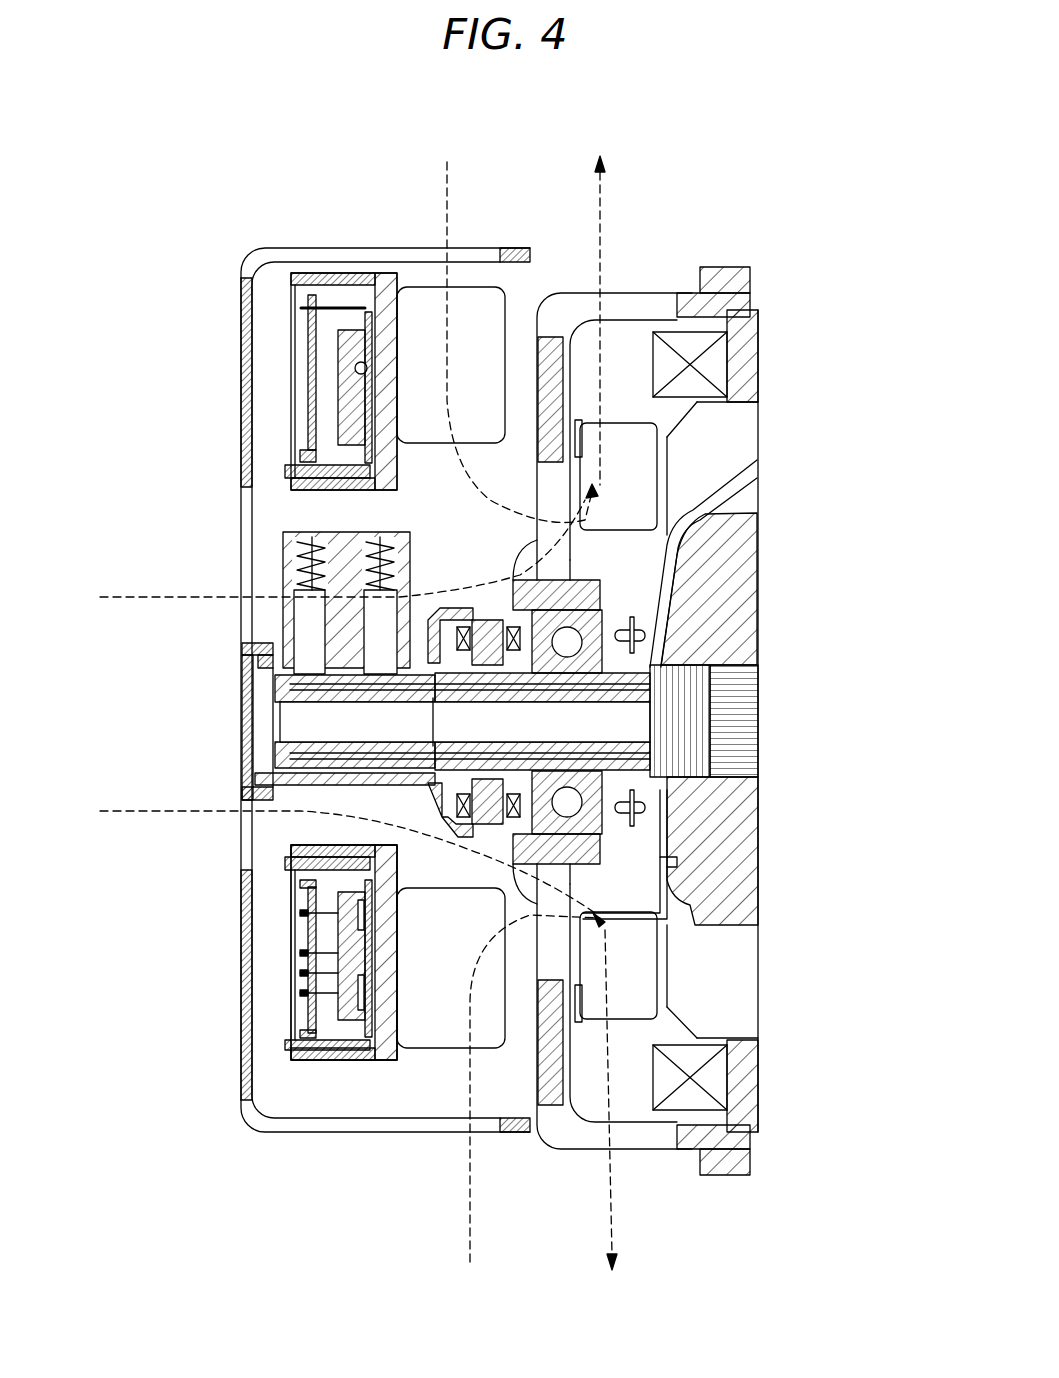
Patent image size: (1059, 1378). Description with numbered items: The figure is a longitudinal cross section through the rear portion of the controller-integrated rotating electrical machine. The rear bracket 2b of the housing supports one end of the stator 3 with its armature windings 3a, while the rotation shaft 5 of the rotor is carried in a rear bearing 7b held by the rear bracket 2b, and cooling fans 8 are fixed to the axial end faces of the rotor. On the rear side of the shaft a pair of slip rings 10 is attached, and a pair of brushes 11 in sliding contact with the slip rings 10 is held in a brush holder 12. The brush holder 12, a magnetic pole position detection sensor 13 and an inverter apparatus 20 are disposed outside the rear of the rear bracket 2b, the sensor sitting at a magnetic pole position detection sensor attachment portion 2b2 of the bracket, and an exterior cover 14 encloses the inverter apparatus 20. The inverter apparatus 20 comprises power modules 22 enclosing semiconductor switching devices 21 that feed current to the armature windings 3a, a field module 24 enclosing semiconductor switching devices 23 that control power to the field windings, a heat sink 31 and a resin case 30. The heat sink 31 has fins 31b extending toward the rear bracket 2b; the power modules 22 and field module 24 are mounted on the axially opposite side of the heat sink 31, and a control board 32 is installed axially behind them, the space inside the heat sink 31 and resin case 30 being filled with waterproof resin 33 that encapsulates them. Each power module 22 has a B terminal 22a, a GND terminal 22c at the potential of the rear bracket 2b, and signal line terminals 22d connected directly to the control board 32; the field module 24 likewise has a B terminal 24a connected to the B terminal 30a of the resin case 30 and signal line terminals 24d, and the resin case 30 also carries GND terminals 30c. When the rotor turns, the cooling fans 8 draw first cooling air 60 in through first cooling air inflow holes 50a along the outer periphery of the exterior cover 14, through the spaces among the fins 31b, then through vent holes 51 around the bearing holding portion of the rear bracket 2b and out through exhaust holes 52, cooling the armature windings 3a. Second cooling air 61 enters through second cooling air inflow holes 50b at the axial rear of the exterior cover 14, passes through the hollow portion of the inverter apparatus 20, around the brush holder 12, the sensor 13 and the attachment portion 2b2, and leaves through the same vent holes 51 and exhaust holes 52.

The rear bracket 2b is at (750, 1177).
The magnetic pole position detection sensor attachment portion 2b2 is at (660, 880).
The stator 3 is at (745, 1057).
The armature windings 3a is at (715, 1075).
The rotation shaft 5 is at (290, 720).
The rear bearing 7b is at (620, 640).
The cooling fans 8 is at (648, 985).
The slip rings 10 is at (290, 695).
The brushes 11 is at (305, 628).
The brush holder 12 is at (290, 660).
The magnetic pole position detection sensor 13 is at (490, 830).
The exterior cover 14 is at (243, 310).
The inverter apparatus 20 is at (319, 1062).
The semiconductor switching devices 21 is at (330, 905).
The power modules 22 is at (330, 930).
The B terminal 22a is at (300, 884).
The GND terminal 22c is at (320, 1032).
The signal line terminals 22d is at (330, 965).
The semiconductor switching devices 23 is at (355, 395).
The field module 24 is at (330, 345).
The B terminal 24a is at (300, 458).
The signal line terminals 24d is at (340, 306).
The resin case 30 is at (256, 1088).
The B terminals 30a is at (300, 472).
The GND terminals 30c is at (297, 1046).
The heat sink 31 is at (377, 1062).
The fins 31b is at (428, 1025).
The control board 32 is at (320, 1000).
The waterproof resin 33 is at (293, 425).
The first cooling air inflow holes 50a is at (415, 248).
The second cooling air inflow holes 50b is at (245, 560).
The vent holes 51 is at (690, 555).
The exhaust holes 52 is at (652, 300).
The first cooling air 60 is at (526, 715).
The second cooling air 61 is at (328, 706).